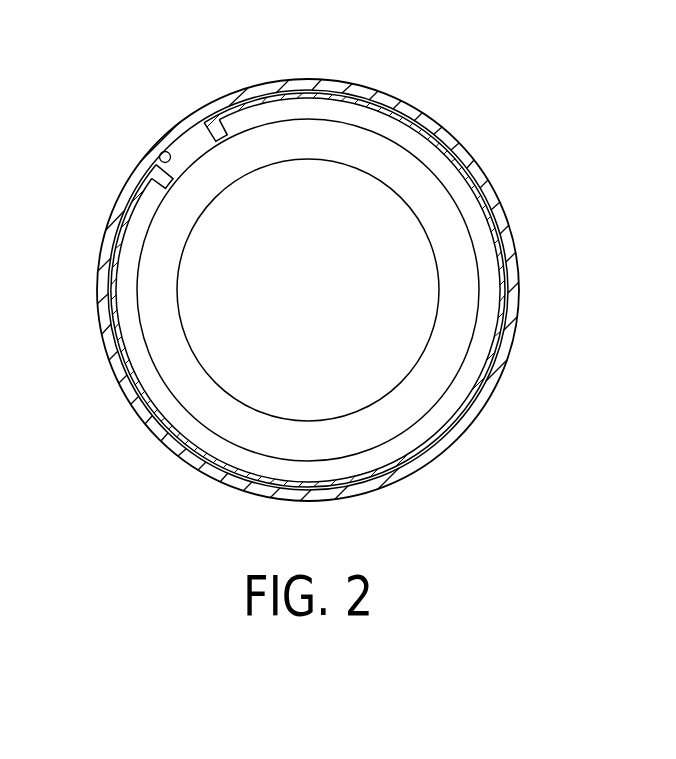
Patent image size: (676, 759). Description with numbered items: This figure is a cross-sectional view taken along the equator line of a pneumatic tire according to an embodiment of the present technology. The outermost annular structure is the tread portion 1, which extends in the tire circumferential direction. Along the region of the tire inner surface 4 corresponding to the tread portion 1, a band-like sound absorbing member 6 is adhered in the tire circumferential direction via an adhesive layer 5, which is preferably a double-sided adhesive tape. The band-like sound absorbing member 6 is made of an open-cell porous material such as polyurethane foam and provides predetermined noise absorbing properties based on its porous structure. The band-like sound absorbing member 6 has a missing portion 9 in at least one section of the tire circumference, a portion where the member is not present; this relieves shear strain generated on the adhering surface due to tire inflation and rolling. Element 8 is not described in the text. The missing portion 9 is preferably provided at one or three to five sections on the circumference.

The tread portion 1 is at (357, 89).
The tire inner surface 4 is at (157, 147).
The adhesive layer 5 is at (254, 99).
The band-like sound absorbing member 6 is at (312, 107).
The inner ring 8 is at (398, 167).
The missing portion 9 is at (185, 153).